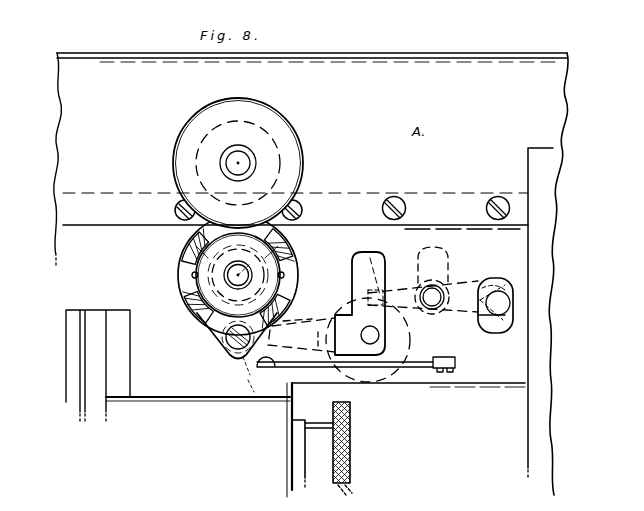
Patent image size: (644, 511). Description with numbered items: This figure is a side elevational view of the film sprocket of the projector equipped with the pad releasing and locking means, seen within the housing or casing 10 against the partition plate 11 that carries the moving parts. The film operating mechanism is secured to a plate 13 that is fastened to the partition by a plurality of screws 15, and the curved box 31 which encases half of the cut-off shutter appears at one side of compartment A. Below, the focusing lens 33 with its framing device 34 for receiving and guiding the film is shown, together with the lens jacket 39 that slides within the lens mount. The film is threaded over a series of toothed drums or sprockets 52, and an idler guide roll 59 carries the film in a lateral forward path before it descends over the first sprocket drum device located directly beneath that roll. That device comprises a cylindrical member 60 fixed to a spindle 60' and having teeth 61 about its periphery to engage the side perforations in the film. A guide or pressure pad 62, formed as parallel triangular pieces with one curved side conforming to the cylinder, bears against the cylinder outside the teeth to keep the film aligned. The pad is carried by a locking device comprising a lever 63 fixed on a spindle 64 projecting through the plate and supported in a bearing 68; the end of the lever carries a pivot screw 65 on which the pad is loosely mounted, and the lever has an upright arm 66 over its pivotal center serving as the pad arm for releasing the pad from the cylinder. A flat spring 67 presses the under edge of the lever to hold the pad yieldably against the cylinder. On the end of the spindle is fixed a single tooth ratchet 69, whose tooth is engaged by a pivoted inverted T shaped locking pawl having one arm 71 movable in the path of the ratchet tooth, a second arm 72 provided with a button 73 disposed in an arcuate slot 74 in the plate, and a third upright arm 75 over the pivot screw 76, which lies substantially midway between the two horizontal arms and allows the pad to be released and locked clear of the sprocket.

The housing or casing 10 is at (384, 53).
The partition plate 11 is at (58, 146).
The plate 13 is at (295, 229).
The screws 15 is at (175, 211).
The curved box 31 is at (528, 153).
The focusing lens 33 is at (160, 397).
The framing device 34 is at (66, 355).
The lens jacket 39 is at (320, 420).
The toothed drums or sprockets 52 is at (196, 268).
The idler guide roll 59 is at (268, 106).
The cylindrical member 60 is at (258, 275).
The spindle 60' is at (250, 275).
The teeth 61 is at (197, 287).
The guide or pressure pad 62 is at (221, 334).
The lever 63 is at (296, 320).
The spindle 64 is at (381, 334).
The pivot screw 65 is at (243, 362).
The upright arm 66 is at (372, 262).
The flat spring 67 is at (362, 364).
The bearing 68 is at (288, 277).
The single tooth ratchet 69 is at (330, 339).
The arm 71 is at (362, 263).
The second arm 72 is at (480, 309).
The button 73 is at (504, 320).
The arcuate slot 74 is at (500, 282).
The third upright arm 75 is at (447, 268).
The pivot screw 76 is at (427, 284).